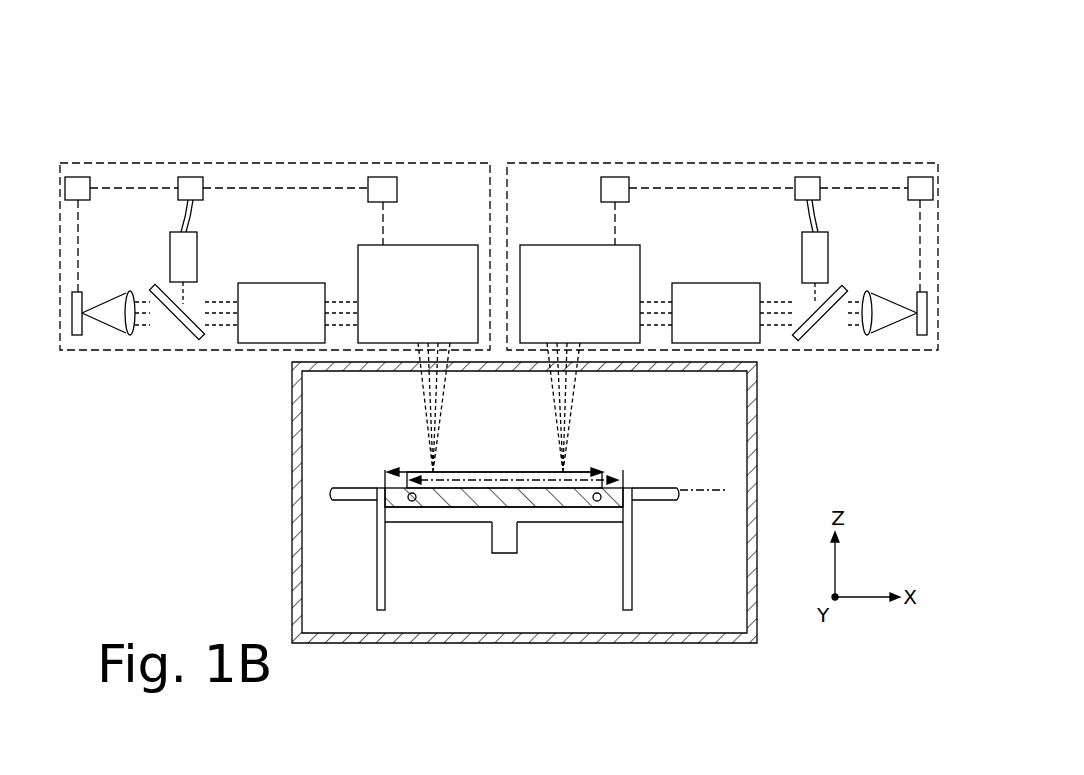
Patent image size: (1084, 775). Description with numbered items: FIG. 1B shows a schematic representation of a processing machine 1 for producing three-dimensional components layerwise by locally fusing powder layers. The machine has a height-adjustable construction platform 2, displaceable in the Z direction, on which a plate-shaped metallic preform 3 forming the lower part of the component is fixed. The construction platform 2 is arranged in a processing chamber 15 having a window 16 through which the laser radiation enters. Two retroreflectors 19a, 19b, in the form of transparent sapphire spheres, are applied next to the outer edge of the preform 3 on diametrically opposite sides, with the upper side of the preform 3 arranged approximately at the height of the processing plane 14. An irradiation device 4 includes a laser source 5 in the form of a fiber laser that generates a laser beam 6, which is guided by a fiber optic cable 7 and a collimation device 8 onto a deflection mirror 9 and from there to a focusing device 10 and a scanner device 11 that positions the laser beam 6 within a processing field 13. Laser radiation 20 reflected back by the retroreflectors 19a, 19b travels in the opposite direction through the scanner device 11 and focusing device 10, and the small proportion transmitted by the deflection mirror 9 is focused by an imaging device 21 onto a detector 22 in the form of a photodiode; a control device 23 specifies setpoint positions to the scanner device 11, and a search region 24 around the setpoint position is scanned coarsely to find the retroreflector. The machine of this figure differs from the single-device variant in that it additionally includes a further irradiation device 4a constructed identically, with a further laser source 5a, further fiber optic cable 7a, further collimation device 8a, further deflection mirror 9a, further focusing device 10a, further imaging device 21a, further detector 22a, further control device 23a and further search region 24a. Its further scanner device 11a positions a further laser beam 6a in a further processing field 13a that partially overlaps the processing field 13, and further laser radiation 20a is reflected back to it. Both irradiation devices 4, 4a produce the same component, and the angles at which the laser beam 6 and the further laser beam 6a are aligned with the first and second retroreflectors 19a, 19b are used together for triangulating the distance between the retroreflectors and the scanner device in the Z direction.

The processing machine 1 is at (115, 105).
The construction platform 2 is at (506, 555).
The preform 3 is at (552, 497).
The irradiation device 4 is at (138, 163).
The further irradiation device 4a is at (860, 163).
The laser source 5 is at (190, 190).
The further laser source 5a is at (808, 190).
The laser beam 6 is at (186, 296).
The further laser beam 6a is at (803, 296).
The fiber optic cable 7 is at (183, 218).
The further fiber optic cable 7a is at (818, 220).
The collimation device 8 is at (188, 255).
The further collimation device 8a is at (808, 258).
The deflection mirror 9 is at (180, 332).
The further deflection mirror 9a is at (832, 332).
The focusing device 10 is at (282, 300).
The further focusing device 10a is at (722, 300).
The scanner device 11 is at (375, 280).
The further scanner device 11a is at (620, 262).
The processing field 13 is at (420, 475).
The further processing field 13a is at (515, 475).
The processing plane 14 is at (710, 492).
The processing chamber 15 is at (295, 505).
The window 16 is at (340, 367).
The first retroreflector 19a is at (395, 500).
The second retroreflector 19b is at (605, 500).
The laser radiation 20 is at (420, 396).
The further laser radiation 20a is at (585, 396).
The imaging device 21 is at (130, 336).
The further imaging device 21a is at (868, 336).
The detector 22 is at (77, 336).
The further detector 22a is at (922, 336).
The control device 23 is at (383, 190).
The further control device 23a is at (613, 190).
The search region 24 is at (80, 190).
The further search region 24a is at (918, 190).